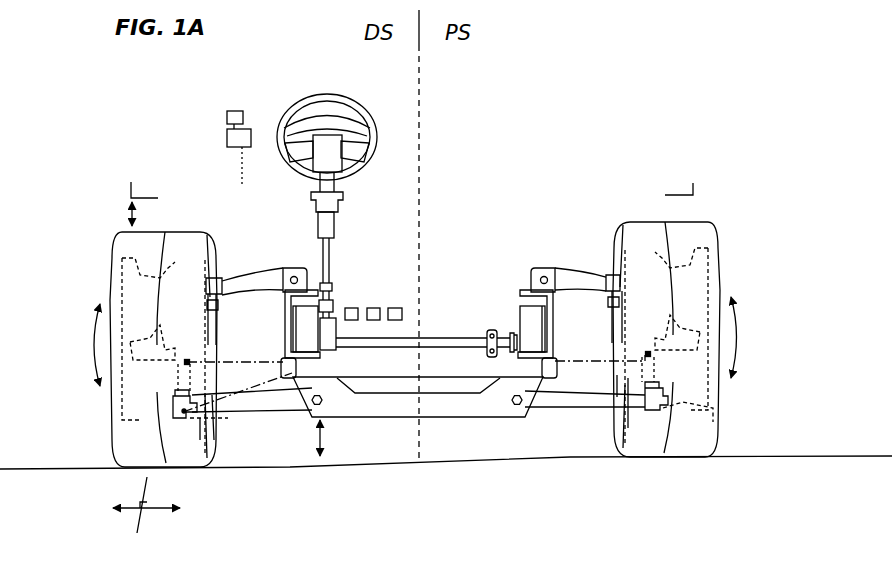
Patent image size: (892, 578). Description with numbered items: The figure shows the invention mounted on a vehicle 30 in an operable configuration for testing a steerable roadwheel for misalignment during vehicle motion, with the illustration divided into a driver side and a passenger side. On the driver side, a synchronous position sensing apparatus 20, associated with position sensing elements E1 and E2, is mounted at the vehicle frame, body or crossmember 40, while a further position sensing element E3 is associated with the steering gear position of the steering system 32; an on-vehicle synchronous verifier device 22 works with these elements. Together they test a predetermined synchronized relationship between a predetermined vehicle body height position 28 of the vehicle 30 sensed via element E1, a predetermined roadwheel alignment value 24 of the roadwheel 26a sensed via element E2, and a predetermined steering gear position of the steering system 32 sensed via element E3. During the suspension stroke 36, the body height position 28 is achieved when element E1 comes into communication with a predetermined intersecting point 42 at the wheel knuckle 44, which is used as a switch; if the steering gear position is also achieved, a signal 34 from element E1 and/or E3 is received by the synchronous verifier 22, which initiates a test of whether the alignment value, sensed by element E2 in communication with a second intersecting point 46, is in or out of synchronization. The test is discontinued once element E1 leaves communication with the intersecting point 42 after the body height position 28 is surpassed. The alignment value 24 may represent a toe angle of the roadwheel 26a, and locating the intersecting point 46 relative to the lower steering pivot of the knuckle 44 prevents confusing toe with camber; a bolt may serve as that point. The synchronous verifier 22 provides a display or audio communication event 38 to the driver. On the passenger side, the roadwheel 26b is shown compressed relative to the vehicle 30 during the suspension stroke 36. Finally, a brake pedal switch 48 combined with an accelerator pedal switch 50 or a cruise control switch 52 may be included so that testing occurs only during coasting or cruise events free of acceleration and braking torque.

The synchronous position sensing apparatus 20 is at (294, 368).
The synchronous verifier device 22 is at (227, 138).
The predetermined roadwheel alignment value 24 is at (103, 518).
The roadwheel 26a is at (117, 417).
The roadwheel 26b is at (722, 410).
The predetermined vehicle body height position 28 is at (131, 212).
The vehicle 30 is at (131, 184).
The steering system 32 is at (335, 258).
The signal 34 is at (242, 177).
The suspension stroke 36 is at (99, 340).
The communication event 38 is at (227, 118).
The vehicle frame, body or crossmember 40 is at (289, 345).
The predetermined intersecting point 42 is at (185, 362).
The wheel knuckle 44 is at (185, 373).
The predetermined intersecting point 46 is at (175, 422).
The brake pedal switch 48 is at (352, 308).
The accelerator pedal switch 50 is at (386, 301).
The cruise control switch 52 is at (403, 313).
The position sensing element E1 is at (247, 362).
The position sensing element E2 is at (414, 398).
The position sensing element E3 is at (409, 357).